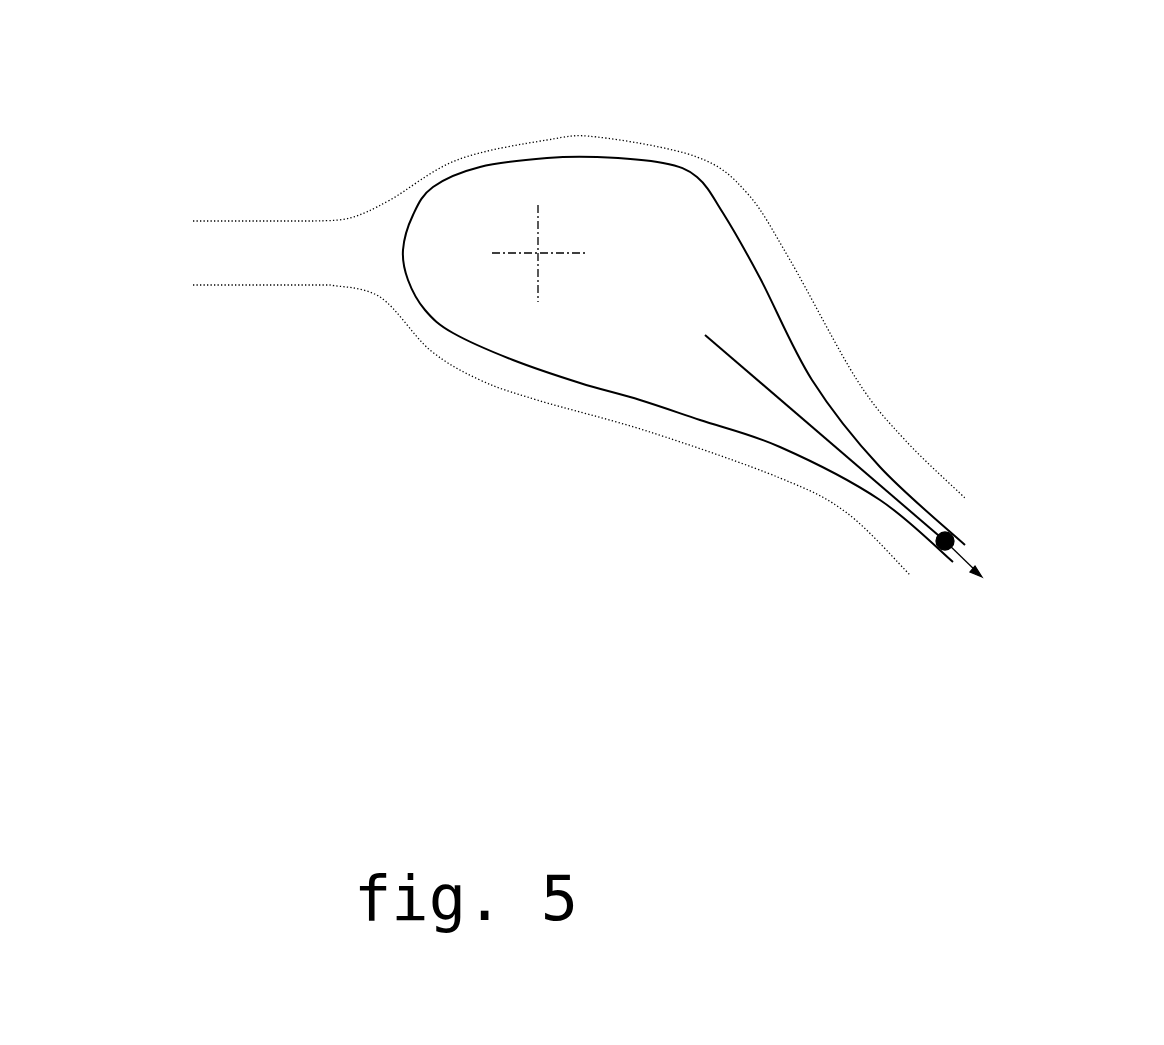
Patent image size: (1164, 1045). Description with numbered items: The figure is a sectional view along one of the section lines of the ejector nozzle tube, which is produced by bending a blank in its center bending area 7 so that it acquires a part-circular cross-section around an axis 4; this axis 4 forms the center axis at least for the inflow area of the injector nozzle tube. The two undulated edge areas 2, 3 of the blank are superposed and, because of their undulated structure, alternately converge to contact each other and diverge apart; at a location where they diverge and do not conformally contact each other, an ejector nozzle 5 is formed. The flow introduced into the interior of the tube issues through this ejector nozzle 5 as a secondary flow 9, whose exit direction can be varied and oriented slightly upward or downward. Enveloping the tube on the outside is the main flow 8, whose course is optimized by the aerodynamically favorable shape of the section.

The edge area 2 is at (932, 513).
The edge area 3 is at (918, 532).
The axis 4 is at (538, 253).
The ejector nozzle 5 is at (952, 535).
The center bending area 7 is at (453, 333).
The main flow 8 is at (813, 305).
The secondary flow 9 is at (972, 565).